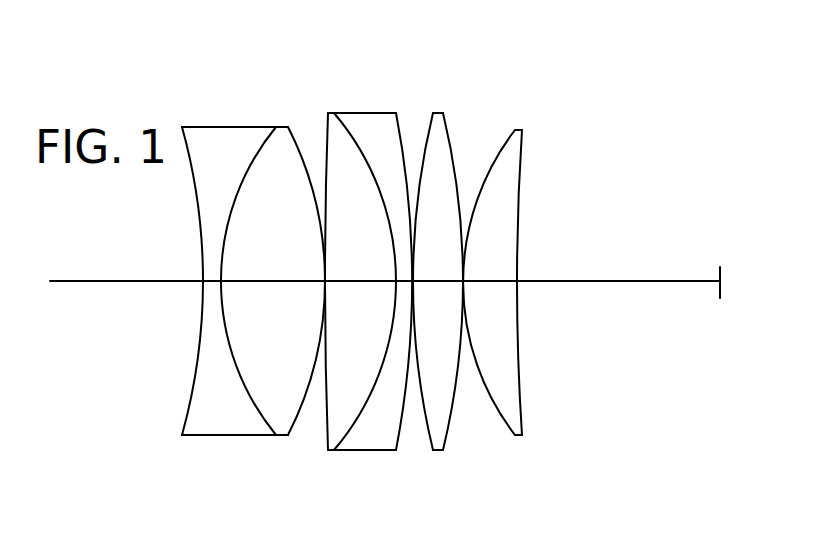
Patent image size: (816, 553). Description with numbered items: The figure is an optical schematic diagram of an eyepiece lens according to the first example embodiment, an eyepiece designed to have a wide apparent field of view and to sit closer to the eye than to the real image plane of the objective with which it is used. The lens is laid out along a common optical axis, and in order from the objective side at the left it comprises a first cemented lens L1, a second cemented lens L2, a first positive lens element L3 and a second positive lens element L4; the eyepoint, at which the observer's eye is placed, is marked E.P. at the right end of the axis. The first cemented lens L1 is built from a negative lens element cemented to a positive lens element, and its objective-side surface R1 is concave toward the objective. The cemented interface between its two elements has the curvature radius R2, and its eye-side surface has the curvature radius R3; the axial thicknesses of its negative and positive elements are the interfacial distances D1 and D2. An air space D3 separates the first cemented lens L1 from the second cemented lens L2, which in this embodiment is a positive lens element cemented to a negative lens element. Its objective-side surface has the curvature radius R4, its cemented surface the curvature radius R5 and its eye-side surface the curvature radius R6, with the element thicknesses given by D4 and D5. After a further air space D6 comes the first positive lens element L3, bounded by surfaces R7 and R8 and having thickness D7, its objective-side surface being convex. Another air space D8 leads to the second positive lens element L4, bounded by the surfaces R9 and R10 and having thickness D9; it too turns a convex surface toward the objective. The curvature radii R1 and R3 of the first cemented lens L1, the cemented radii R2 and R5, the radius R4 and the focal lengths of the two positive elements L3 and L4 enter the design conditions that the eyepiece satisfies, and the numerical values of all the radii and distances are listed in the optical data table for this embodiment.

The curvature radius of objective-side surface of first cemented lens R1 is at (187, 142).
The curvature radius of cemented surface of first cemented lens R2 is at (250, 135).
The curvature radius of eye-side surface of first cemented lens R3 is at (299, 248).
The curvature radius of objective-side surface of second cemented lens R4 is at (328, 130).
The curvature radius of cemented surface of second cemented lens R5 is at (357, 137).
The curvature radius of eye-side surface of second cemented lens R6 is at (398, 233).
The curvature radius of objective-side surface of first positive lens element R7 is at (432, 121).
The curvature radius of eye-side surface of first positive lens element R8 is at (467, 263).
The curvature radius of objective-side surface of second positive lens element R9 is at (512, 133).
The curvature radius of eye-side surface of second positive lens element R10 is at (549, 257).
The interfacial distance after surface one D1 is at (210, 278).
The interfacial distance after surface two D2 is at (258, 276).
The interfacial distance after surface three D3 is at (323, 283).
The interfacial distance after surface four D4 is at (347, 275).
The interfacial distance after surface five D5 is at (403, 285).
The interfacial distance after surface six D6 is at (415, 285).
The interfacial distance after surface seven D7 is at (432, 277).
The interfacial distance after surface eight D8 is at (465, 284).
The interfacial distance after surface nine D9 is at (483, 278).
The first cemented lens L1 is at (248, 270).
The second cemented lens L2 is at (364, 266).
The first positive lens element L3 is at (452, 285).
The second positive lens element L4 is at (522, 282).
The eyepoint E.P. is at (718, 266).